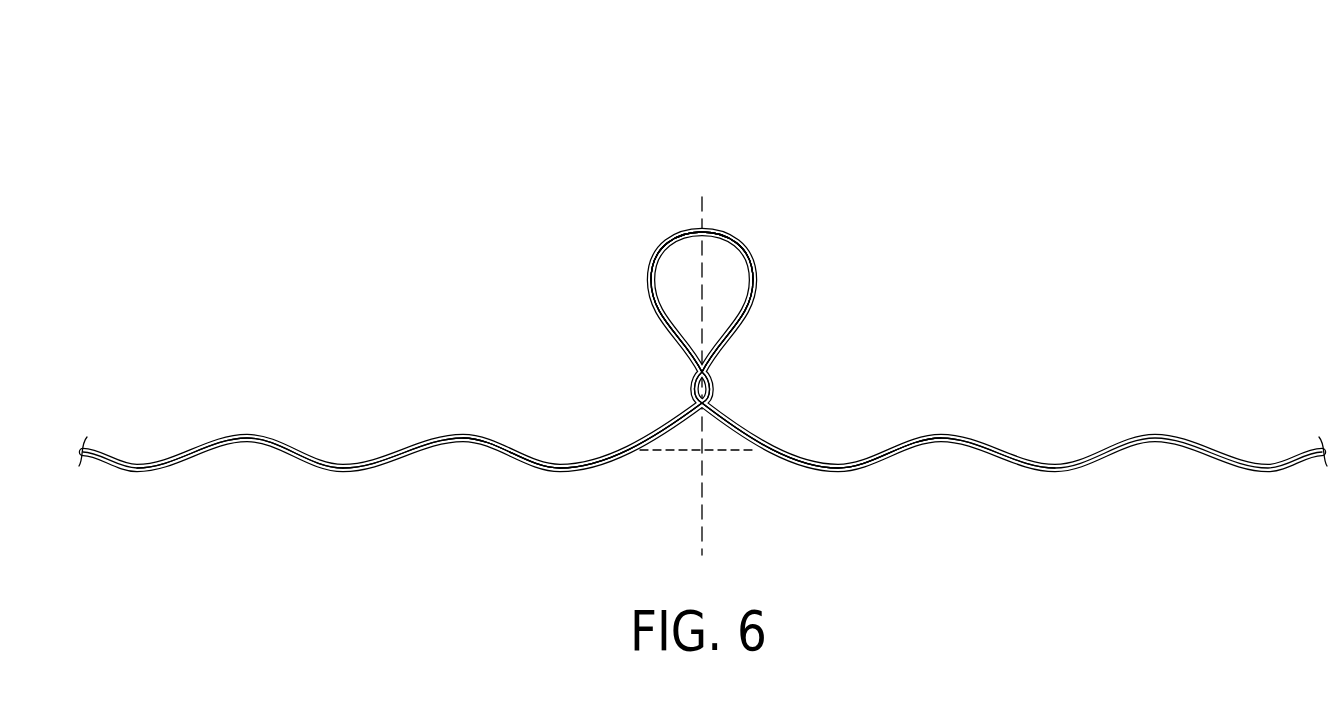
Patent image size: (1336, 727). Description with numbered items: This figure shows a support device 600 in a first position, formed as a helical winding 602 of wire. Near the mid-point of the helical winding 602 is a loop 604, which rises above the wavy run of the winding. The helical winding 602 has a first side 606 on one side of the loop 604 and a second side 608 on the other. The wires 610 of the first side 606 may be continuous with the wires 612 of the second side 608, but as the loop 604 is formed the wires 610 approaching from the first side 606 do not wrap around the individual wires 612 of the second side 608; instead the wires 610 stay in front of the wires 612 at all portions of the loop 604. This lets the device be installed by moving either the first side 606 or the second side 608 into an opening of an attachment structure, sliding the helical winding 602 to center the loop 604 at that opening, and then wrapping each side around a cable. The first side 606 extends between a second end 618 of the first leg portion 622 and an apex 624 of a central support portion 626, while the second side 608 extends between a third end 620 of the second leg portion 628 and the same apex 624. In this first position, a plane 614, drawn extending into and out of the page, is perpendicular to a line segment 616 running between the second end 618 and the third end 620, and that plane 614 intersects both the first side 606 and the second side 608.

The support device 600 is at (515, 113).
The helical winding 602 is at (455, 432).
The loop 604 is at (738, 243).
The first side 606 is at (648, 287).
The second side 608 is at (758, 287).
The wires of the first side 610 is at (567, 466).
The wires of the second side 612 is at (880, 450).
The plane 614 is at (700, 530).
The line segment 616 is at (722, 454).
The second end 618 is at (635, 444).
The third end 620 is at (766, 444).
The first leg portion 622 is at (245, 435).
The apex 624 is at (700, 226).
The central support portion 626 is at (651, 152).
The second leg portion 628 is at (953, 435).